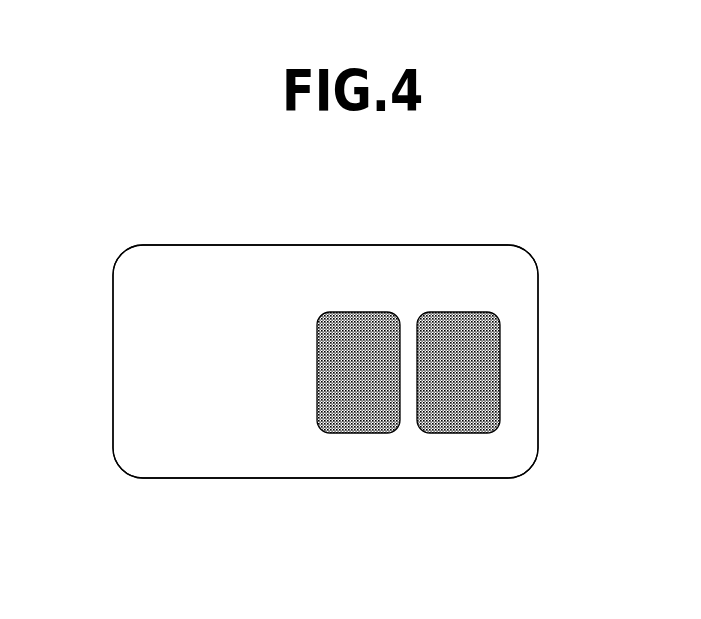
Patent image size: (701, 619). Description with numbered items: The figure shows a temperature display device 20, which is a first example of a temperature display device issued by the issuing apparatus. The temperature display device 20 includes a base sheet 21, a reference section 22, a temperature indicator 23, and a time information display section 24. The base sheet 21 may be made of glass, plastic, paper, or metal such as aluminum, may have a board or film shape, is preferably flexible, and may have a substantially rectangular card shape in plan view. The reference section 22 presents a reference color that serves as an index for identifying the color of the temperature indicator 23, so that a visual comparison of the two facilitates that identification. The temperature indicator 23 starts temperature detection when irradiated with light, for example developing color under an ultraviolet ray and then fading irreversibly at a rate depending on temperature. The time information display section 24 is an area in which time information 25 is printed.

The temperature display device 20 is at (574, 234).
The base sheet 21 is at (539, 423).
The reference section 22 is at (360, 312).
The temperature indicator 23 is at (451, 312).
The time information display section 24 is at (132, 337).
The time information 25 is at (246, 421).